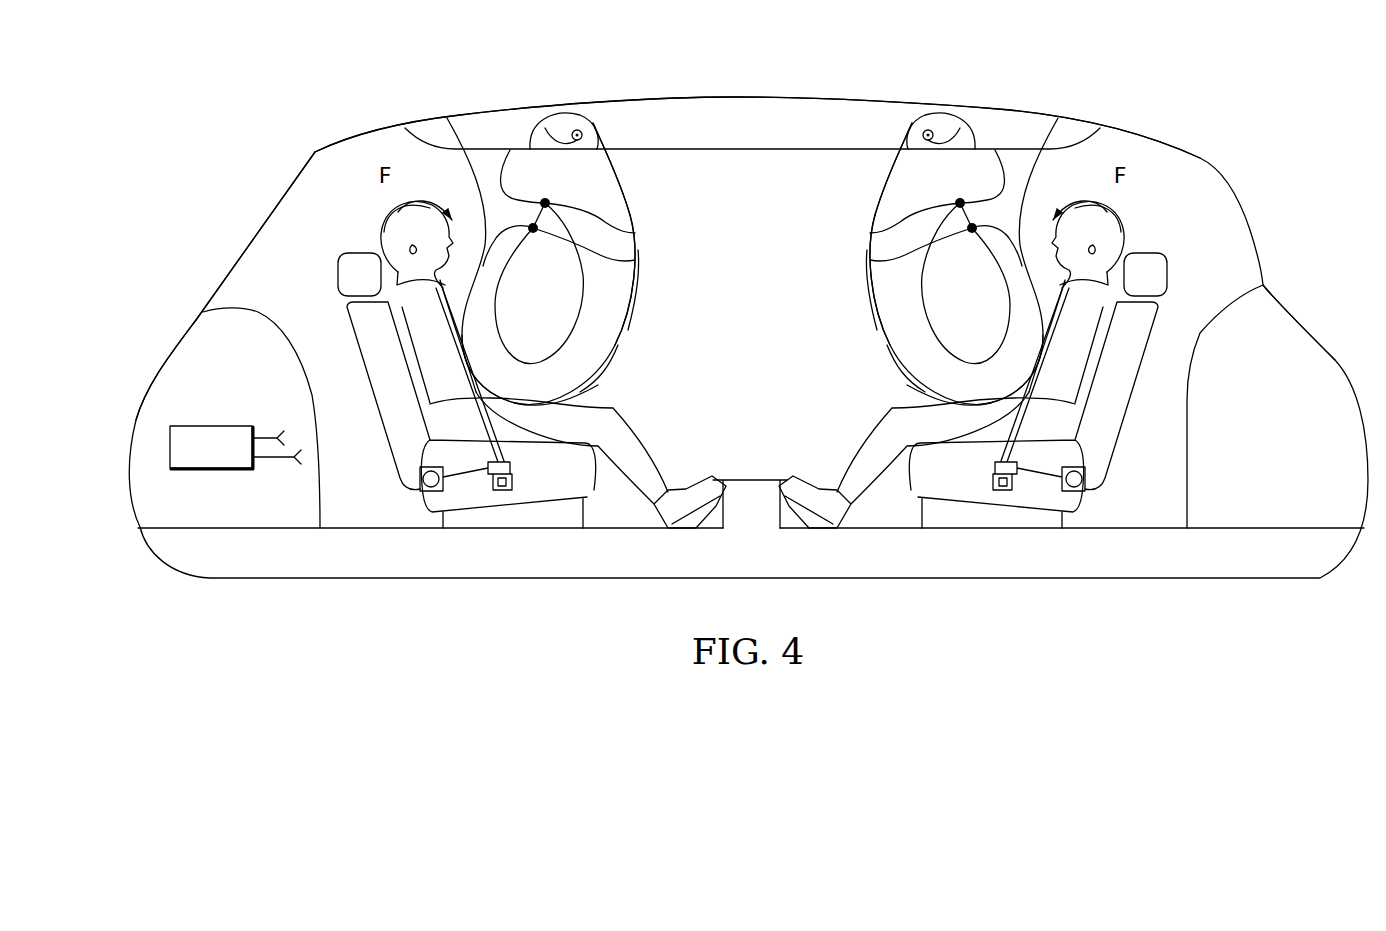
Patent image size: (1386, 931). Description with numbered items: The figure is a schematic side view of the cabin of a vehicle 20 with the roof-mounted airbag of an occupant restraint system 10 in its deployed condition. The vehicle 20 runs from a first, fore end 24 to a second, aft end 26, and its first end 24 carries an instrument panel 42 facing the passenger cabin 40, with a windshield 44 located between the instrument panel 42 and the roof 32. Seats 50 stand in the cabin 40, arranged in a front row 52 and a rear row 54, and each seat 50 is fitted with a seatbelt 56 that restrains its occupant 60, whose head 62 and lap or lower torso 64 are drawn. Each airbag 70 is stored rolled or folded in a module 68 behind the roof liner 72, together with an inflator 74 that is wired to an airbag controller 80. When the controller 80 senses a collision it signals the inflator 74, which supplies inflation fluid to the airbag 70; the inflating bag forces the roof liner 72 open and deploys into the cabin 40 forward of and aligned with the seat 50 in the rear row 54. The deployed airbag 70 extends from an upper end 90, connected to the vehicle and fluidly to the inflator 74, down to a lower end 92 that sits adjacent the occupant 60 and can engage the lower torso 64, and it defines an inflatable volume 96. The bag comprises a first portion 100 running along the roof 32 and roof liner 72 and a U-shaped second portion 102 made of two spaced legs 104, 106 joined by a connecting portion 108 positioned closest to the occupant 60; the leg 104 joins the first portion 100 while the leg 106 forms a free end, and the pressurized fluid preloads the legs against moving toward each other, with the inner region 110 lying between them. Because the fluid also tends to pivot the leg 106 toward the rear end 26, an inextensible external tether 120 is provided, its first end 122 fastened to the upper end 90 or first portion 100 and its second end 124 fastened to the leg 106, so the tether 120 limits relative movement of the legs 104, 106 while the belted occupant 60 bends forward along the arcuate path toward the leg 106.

The occupant restraint system 10 is at (563, 132).
The vehicle 20 is at (205, 240).
The first end 24 is at (165, 330).
The second end 26 is at (1304, 307).
The roof 32 is at (742, 97).
The cabin 40 is at (760, 330).
The instrument panel 42 is at (260, 311).
The windshield 44 is at (284, 198).
The seat 50 is at (403, 408).
The front row 52 is at (497, 533).
The rear row 54 is at (1000, 533).
The seatbelt 56 is at (487, 430).
The occupant 60 is at (443, 347).
The occupant head 62 is at (392, 214).
The lower torso 64 is at (640, 469).
The module 68 is at (589, 111).
The airbag 70 is at (641, 222).
The roof liner 72 is at (764, 150).
The inflator 74 is at (576, 129).
The airbag controller 80 is at (210, 425).
The upper end 90 is at (631, 191).
The lower end 92 is at (597, 393).
The inflatable volume 96 is at (590, 358).
The first portion 100 is at (510, 172).
The second portion 102 is at (616, 327).
The leg 104 is at (510, 260).
The leg 106 is at (636, 292).
The connecting portion 108 is at (557, 381).
The inner chamber 110 is at (545, 327).
The tether 120 is at (470, 146).
The first end 122 is at (636, 233).
The second end 124 is at (636, 260).